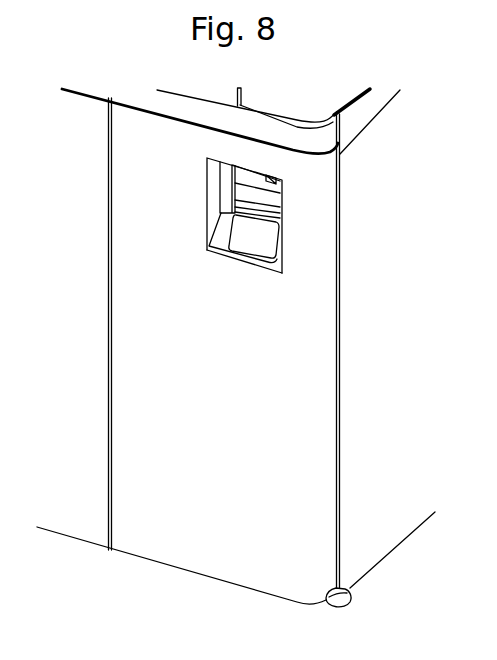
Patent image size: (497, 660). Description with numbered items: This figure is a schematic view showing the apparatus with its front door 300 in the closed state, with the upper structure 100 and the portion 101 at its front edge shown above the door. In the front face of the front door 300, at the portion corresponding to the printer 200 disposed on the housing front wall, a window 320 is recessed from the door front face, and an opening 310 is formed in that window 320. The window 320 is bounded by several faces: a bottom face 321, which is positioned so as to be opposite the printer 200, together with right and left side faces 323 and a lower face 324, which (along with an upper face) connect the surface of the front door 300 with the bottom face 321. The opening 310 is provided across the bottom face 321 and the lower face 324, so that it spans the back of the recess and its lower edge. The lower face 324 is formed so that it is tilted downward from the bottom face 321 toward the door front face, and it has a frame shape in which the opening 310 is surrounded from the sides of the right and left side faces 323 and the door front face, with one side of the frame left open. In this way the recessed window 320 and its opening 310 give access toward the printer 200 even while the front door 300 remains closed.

The top cover 100 is at (327, 90).
The front edge of top cover 101 is at (160, 105).
The printer 200 is at (267, 203).
The front door 300 is at (320, 440).
The opening 310 is at (263, 240).
The window 320 is at (223, 236).
The bottom face 321 is at (228, 183).
The right and left side faces 323 is at (213, 213).
The lower face 324 is at (253, 261).